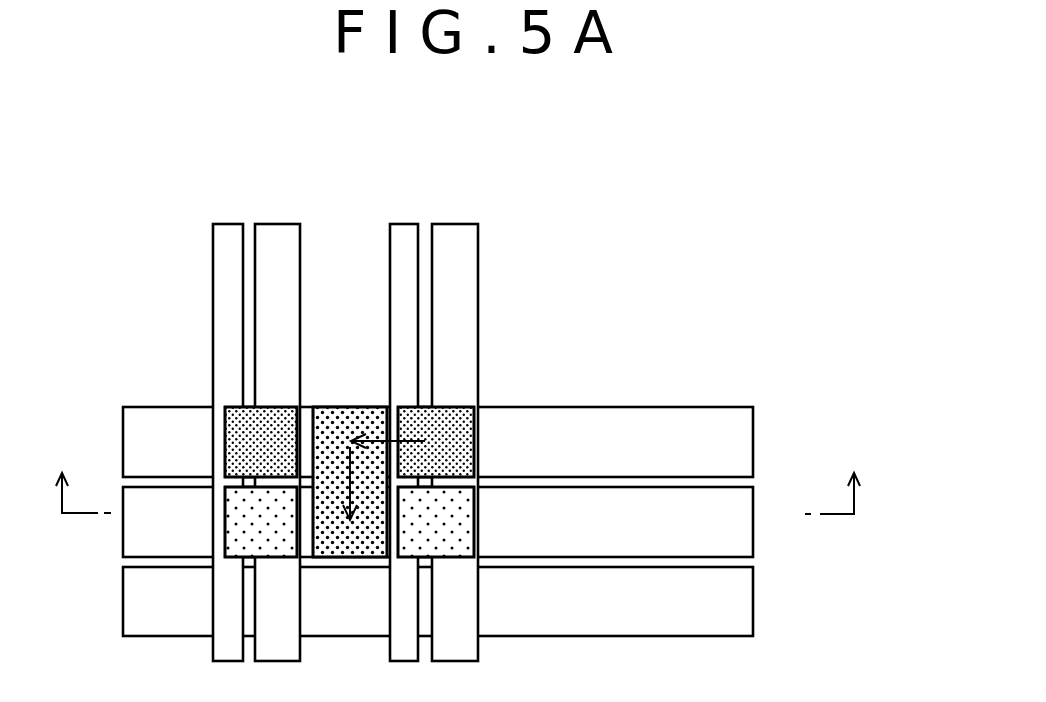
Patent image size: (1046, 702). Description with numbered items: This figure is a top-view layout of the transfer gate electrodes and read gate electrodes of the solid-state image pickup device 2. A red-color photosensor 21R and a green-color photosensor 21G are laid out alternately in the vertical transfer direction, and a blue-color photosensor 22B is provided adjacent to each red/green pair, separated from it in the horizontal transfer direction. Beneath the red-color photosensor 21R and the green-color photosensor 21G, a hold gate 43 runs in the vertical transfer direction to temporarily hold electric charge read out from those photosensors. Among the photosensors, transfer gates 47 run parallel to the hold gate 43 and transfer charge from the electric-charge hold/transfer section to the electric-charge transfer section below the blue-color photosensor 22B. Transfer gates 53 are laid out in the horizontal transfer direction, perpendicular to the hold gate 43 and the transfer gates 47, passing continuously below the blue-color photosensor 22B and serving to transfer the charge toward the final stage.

The solid-state image pickup device 2 is at (675, 252).
The green-color photosensor 21G is at (467, 418).
The red-color photosensor 21R is at (470, 517).
The blue-color photosensor 22B is at (353, 407).
The hold gate 43 is at (284, 236).
The transfer gate 47 is at (745, 432).
The transfer gate 53 is at (228, 232).